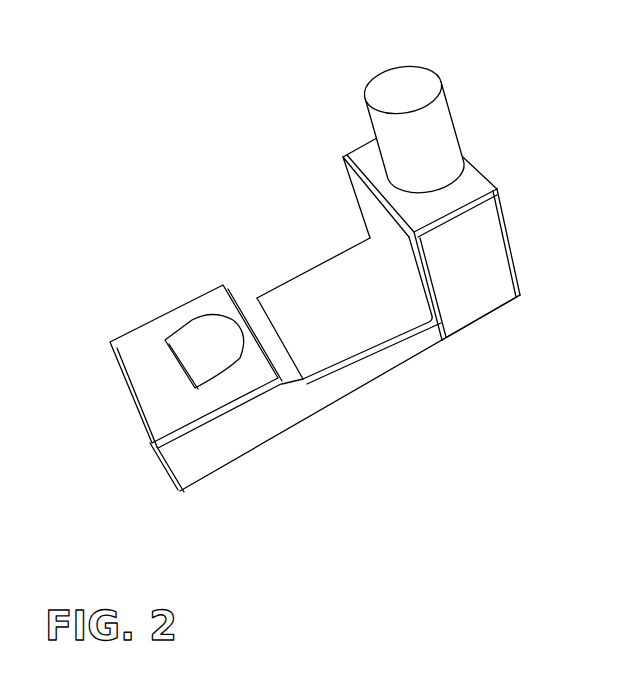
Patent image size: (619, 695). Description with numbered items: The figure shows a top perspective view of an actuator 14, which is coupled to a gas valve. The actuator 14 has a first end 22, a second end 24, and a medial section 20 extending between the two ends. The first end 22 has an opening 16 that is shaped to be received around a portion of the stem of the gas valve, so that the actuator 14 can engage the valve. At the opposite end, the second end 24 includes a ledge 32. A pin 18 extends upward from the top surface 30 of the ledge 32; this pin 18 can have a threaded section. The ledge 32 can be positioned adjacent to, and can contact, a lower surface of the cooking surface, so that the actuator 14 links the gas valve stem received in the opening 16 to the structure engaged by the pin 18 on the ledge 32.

The actuator 14 is at (275, 262).
The opening 16 is at (197, 343).
The pin 18 is at (440, 107).
The medial section 20 is at (371, 380).
The first end 22 is at (230, 463).
The second end 24 is at (484, 318).
The top surface 30 is at (472, 180).
The ledge 32 is at (487, 222).